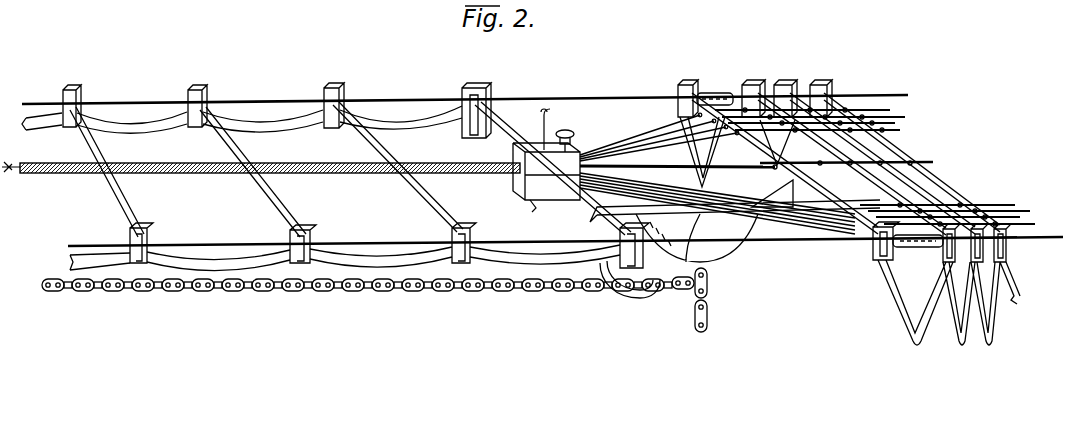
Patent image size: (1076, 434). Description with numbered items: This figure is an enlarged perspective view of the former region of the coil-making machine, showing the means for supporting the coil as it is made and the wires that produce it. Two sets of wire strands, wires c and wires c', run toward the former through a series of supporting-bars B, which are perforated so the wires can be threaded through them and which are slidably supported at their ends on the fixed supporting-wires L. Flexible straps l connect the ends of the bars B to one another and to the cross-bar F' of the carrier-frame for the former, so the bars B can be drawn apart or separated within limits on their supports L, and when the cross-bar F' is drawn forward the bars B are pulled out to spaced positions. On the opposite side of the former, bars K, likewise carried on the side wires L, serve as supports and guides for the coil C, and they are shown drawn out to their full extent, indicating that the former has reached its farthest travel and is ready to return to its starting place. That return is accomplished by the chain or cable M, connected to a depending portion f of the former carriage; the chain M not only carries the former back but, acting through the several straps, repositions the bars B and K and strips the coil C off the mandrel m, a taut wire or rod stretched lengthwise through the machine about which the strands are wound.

The bars K is at (160, 128).
The coil C is at (316, 162).
The supporting-wires L is at (384, 100).
The chain or cable M is at (428, 292).
The cross-bar F' is at (523, 174).
The supporting-bars B is at (745, 95).
The wires c is at (814, 118).
The mandrel m is at (934, 162).
The wires c' is at (950, 209).
The frame clamps F'' is at (920, 249).
The flexible straps l is at (893, 305).
The depending portion f is at (690, 259).